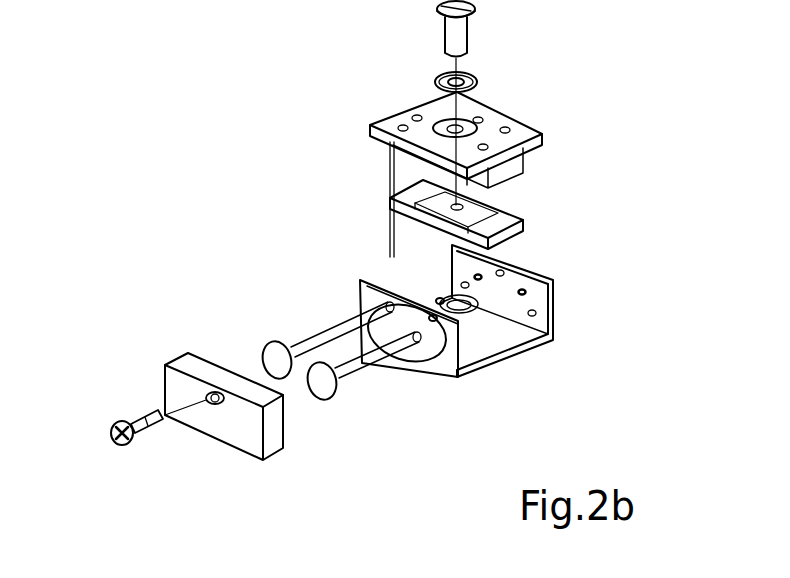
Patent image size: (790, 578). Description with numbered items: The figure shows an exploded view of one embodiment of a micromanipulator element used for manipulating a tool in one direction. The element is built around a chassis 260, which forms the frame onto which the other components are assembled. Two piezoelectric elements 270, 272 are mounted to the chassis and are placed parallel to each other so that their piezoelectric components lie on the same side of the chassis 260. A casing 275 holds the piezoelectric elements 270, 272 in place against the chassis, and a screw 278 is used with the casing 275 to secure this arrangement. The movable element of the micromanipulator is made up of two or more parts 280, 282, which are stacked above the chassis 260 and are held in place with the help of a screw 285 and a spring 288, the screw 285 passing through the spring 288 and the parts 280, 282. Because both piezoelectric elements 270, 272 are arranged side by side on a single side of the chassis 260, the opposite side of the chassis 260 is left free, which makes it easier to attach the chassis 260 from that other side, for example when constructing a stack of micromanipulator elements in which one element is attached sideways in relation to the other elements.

The chassis 260 is at (497, 328).
The piezoelectric element 270 is at (347, 368).
The piezoelectric element 272 is at (327, 323).
The casing 275 is at (233, 428).
The screw 278 is at (113, 423).
The part of movable element 280 is at (503, 222).
The part of movable element 282 is at (511, 158).
The screw 285 is at (443, 44).
The spring 288 is at (477, 76).